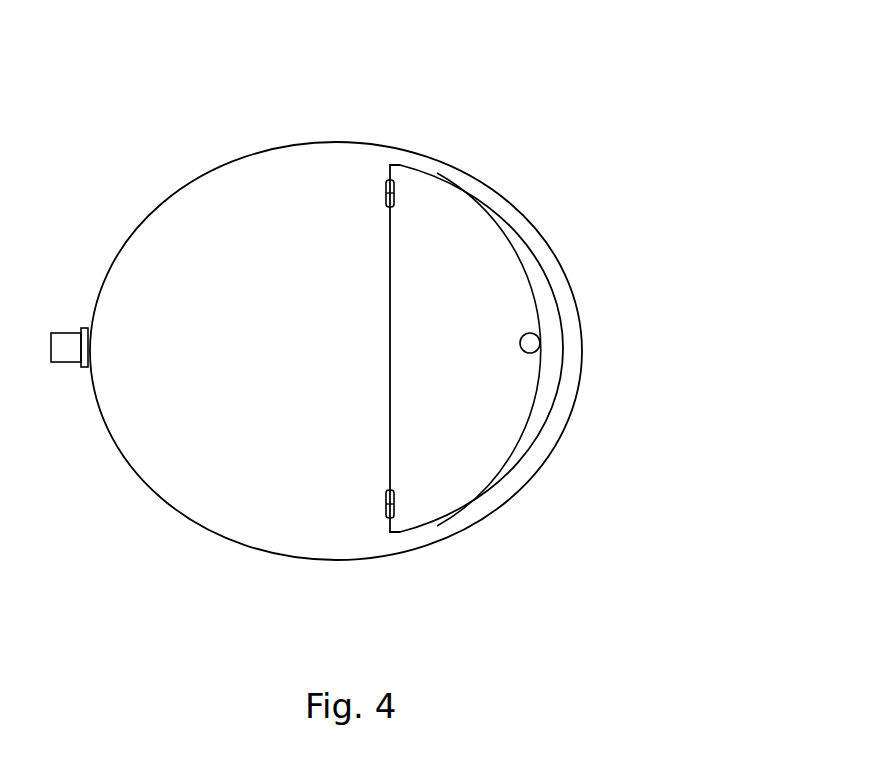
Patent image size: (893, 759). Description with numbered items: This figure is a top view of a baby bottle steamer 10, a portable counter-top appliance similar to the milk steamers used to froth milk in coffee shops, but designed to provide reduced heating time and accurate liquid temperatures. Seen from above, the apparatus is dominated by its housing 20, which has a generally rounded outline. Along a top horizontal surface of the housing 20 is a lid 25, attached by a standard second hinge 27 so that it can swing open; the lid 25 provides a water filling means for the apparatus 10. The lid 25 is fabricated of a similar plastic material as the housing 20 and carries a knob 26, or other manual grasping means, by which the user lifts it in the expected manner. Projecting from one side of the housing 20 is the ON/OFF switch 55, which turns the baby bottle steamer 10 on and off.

The baby bottle steamer 10 is at (757, 193).
The housing 20 is at (237, 198).
The lid 25 is at (467, 232).
The knob 26 is at (532, 343).
The second hinge 27 is at (389, 178).
The ON/OFF switch 55 is at (78, 333).